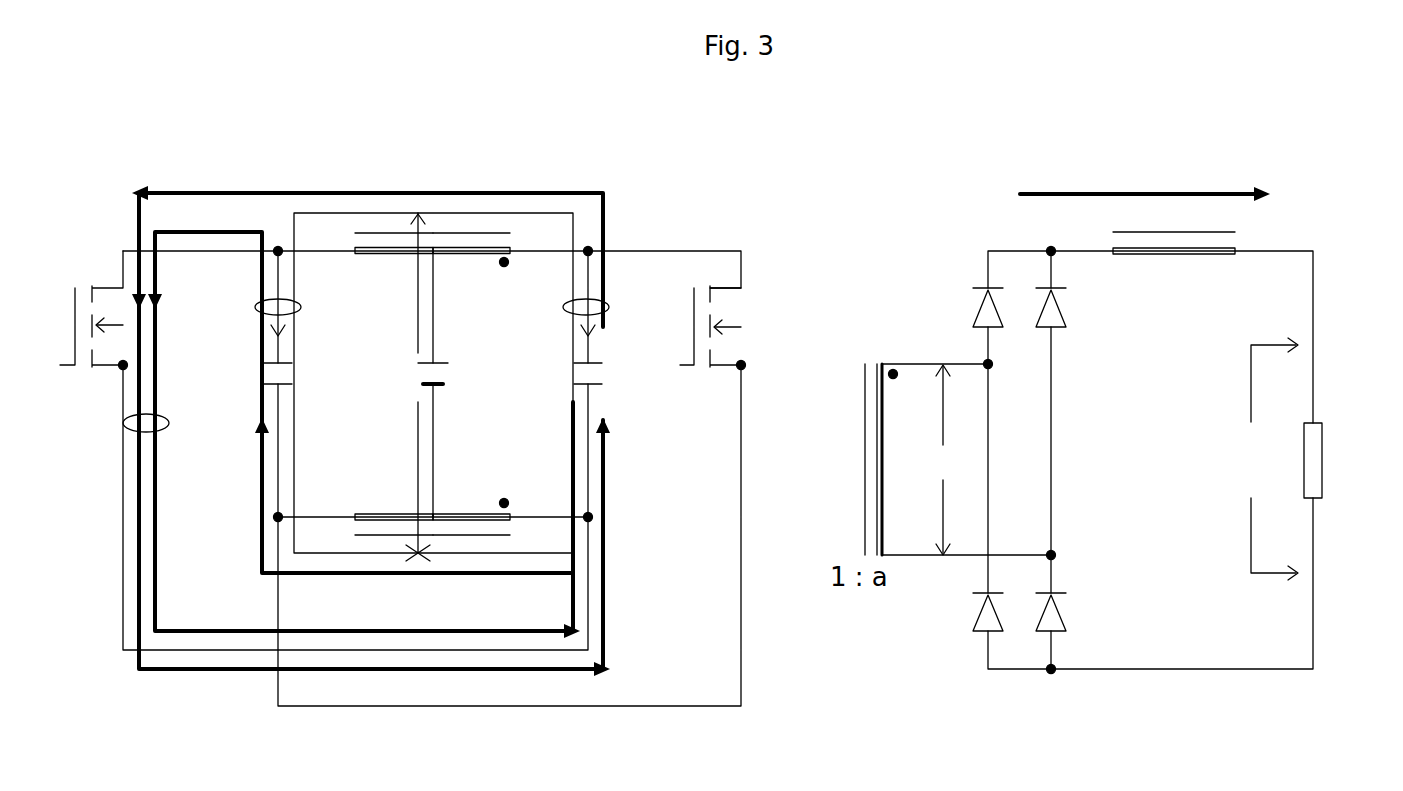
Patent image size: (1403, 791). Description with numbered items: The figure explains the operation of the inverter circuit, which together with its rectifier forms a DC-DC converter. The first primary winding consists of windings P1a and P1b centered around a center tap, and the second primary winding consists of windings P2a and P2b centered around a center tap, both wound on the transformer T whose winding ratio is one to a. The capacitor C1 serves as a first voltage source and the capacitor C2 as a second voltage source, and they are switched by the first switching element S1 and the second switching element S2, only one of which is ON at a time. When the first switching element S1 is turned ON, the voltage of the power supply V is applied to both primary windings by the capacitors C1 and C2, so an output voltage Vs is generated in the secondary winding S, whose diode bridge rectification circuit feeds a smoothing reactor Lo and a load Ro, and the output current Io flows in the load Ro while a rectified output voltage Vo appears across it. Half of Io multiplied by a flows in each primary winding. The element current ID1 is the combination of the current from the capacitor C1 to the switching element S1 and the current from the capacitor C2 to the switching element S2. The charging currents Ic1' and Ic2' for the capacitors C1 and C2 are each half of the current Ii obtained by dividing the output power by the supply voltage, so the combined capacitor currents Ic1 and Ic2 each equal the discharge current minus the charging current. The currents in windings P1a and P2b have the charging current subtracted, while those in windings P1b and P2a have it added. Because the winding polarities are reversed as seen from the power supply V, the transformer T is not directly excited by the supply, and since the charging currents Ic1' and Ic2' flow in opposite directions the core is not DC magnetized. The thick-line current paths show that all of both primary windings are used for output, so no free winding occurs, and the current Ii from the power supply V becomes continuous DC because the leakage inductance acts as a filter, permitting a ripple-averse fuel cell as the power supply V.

The first switching element S1 is at (120, 310).
The second switching element S2 is at (739, 328).
The capacitor C1 is at (560, 381).
The capacitor C2 is at (299, 381).
The winding P1a is at (471, 260).
The winding P1b is at (394, 260).
The winding P2a is at (471, 510).
The winding P2b is at (394, 510).
The combined current Ic1 is at (615, 307).
The combined current Ic2 is at (247, 307).
The charging current Ic1' is at (556, 314).
The charging current Ic2' is at (317, 314).
The element current ID1 is at (123, 423).
The current supplied from the power supply Ii is at (411, 387).
The power supply V is at (438, 401).
The transformer T is at (863, 443).
The secondary winding S is at (894, 459).
The output voltage Vs is at (947, 460).
The smoothing reactor Lo is at (1174, 260).
The output current Io is at (1160, 194).
The load Ro is at (1338, 460).
The output voltage Vo is at (1264, 459).